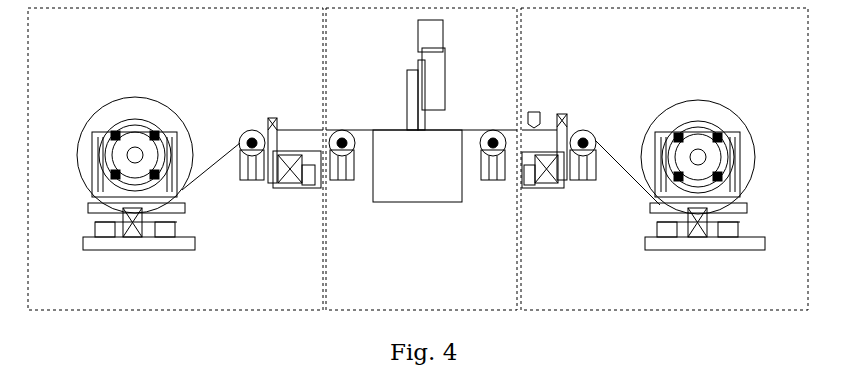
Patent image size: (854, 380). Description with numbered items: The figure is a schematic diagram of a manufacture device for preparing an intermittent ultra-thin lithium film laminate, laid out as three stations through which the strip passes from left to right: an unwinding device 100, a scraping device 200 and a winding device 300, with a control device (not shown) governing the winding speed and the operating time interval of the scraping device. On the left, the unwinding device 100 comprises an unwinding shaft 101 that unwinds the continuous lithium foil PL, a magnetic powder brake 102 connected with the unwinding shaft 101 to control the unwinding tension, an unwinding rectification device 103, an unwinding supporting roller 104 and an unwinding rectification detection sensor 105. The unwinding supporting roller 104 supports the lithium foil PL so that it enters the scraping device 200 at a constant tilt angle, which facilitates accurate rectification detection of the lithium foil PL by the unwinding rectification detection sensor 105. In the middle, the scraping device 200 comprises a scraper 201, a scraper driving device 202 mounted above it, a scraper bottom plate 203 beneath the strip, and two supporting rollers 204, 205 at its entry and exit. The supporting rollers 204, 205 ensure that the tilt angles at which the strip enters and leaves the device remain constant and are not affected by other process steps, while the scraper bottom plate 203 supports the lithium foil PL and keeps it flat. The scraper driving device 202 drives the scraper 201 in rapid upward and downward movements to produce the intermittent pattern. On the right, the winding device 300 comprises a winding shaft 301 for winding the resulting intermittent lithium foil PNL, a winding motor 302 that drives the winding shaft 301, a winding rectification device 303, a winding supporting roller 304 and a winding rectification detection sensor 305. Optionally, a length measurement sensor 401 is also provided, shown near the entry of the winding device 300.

The unwinding device 100 is at (175, 159).
The unwinding shaft 101 is at (112, 208).
The magnetic powder brake 102 is at (137, 117).
The unwinding rectification device 103 is at (171, 210).
The unwinding supporting roller 104 is at (248, 130).
The unwinding rectification detection sensor 105 is at (276, 122).
The lithium foil PL is at (213, 168).
The scraping device 200 is at (421, 159).
The scraper 201 is at (408, 108).
The scraper driving device 202 is at (435, 80).
The scraper bottom plate 203 is at (416, 195).
The supporting roller 204 is at (340, 130).
The supporting roller 205 is at (492, 130).
The winding device 300 is at (664, 159).
The winding shaft 301 is at (675, 180).
The winding motor 302 is at (683, 118).
The winding rectification device 303 is at (707, 227).
The winding supporting roller 304 is at (565, 185).
The winding rectification detection sensor 305 is at (571, 128).
The length measurement sensor 401 is at (533, 108).
The intermittent lithium foil PNL is at (627, 173).